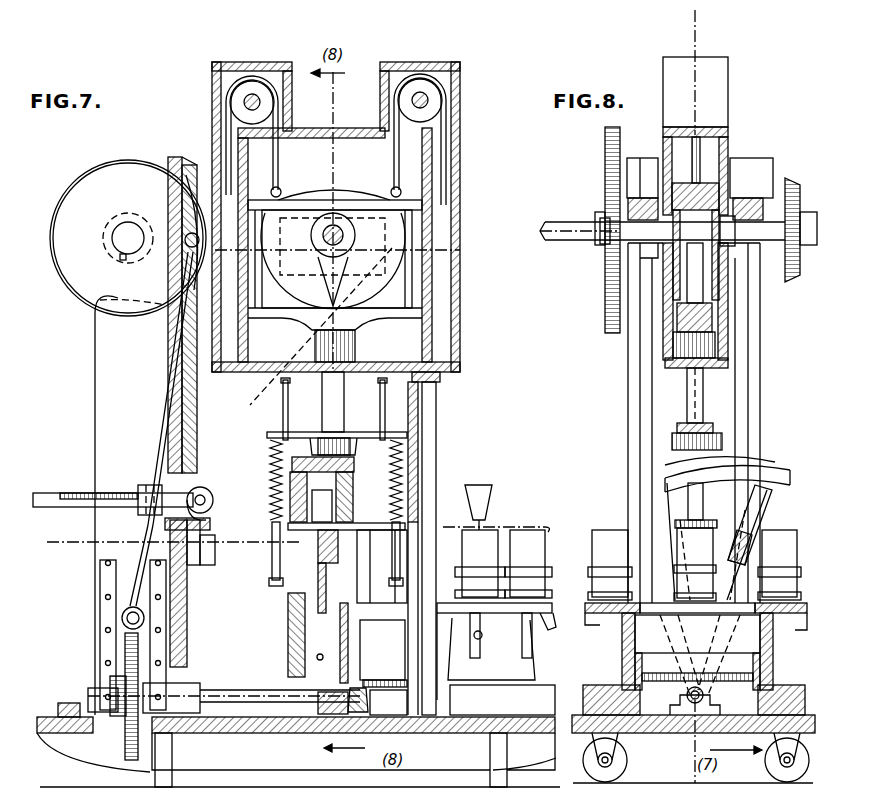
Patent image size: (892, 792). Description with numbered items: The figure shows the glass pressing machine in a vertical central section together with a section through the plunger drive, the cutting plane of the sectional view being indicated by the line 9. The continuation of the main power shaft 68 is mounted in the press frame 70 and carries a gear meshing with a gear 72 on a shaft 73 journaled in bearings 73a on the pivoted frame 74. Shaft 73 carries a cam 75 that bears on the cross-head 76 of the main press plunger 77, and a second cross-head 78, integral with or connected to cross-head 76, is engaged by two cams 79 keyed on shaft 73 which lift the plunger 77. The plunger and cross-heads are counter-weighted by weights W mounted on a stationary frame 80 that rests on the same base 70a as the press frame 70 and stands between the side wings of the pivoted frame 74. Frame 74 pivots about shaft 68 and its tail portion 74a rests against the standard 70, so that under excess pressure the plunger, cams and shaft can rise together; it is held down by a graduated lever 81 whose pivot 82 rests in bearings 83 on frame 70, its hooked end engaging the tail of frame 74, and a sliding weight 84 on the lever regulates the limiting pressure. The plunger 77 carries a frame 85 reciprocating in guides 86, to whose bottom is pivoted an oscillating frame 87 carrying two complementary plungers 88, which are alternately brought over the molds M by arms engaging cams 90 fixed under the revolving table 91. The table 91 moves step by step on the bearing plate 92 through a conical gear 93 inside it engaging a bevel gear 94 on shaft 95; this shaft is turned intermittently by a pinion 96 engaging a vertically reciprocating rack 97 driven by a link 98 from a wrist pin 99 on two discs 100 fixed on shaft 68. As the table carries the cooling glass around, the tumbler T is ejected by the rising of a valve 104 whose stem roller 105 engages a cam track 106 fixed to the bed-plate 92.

In FIG. 7, the shaft 68 is at (120, 228).
In FIG. 7, the discs 100 is at (128, 242).
In FIG. 7, the wrist pin 99 is at (210, 215).
In FIG. 7, the frame 80 is at (240, 163).
In FIG. 8, the frame 80 is at (728, 157).
In FIG. 7, the bearings 73a is at (339, 203).
In FIG. 8, the bearings 73a is at (642, 203).
In FIG. 7, the cross-head 78 is at (355, 191).
In FIG. 8, the cross-head 78 is at (707, 183).
In FIG. 7, the cams 79 is at (390, 227).
In FIG. 8, the cams 79 is at (715, 278).
In FIG. 7, the shaft 73 is at (585, 238).
In FIG. 8, the shaft 73 is at (746, 226).
In FIG. 7, the weights W is at (440, 281).
In FIG. 7, the cam 75 is at (690, 283).
In FIG. 8, the cam 75 is at (690, 303).
In FIG. 7, the cross-head 76 is at (680, 333).
In FIG. 8, the cross-head 76 is at (673, 340).
In FIG. 7, the press frame 70 is at (95, 370).
In FIG. 7, the link 98 is at (155, 443).
In FIG. 7, the pivoted frame 74 is at (173, 470).
In FIG. 8, the pivoted frame 74 is at (642, 372).
In FIG. 7, the tail portion 74a is at (197, 463).
In FIG. 8, the tail portion 74a is at (632, 450).
In FIG. 7, the lever 81 is at (74, 493).
In FIG. 7, the sliding weight 84 is at (145, 487).
In FIG. 7, the pivot 82 is at (213, 496).
In FIG. 7, the bearings 83 is at (207, 528).
In FIG. 7, the main press plunger 77 is at (688, 405).
In FIG. 8, the main press plunger 77 is at (695, 400).
In FIG. 8, the frame 85 is at (665, 470).
In FIG. 7, the tumbler T is at (481, 502).
In FIG. 7, the molds M is at (492, 540).
In FIG. 7, the section line 9 is at (501, 526).
In FIG. 7, the revolving table 91 is at (548, 603).
In FIG. 8, the revolving table 91 is at (782, 613).
In FIG. 7, the valve 104 is at (303, 590).
In FIG. 7, the roller 105 is at (300, 632).
In FIG. 7, the guides 86 is at (282, 636).
In FIG. 7, the complementary oscillating frame 87 is at (300, 658).
In FIG. 8, the complementary oscillating frame 87 is at (763, 483).
In FIG. 7, the rack 97 is at (128, 646).
In FIG. 7, the pinion 96 is at (122, 682).
In FIG. 7, the shaft 95 is at (223, 705).
In FIG. 7, the base 70a is at (273, 733).
In FIG. 7, the bevel gear 94 is at (368, 713).
In FIG. 7, the cams 90 is at (542, 624).
In FIG. 8, the cams 90 is at (807, 625).
In FIG. 7, the cam track 106 is at (458, 660).
In FIG. 7, the bearing plate 92 is at (496, 664).
In FIG. 8, the bearing plate 92 is at (562, 693).
In FIG. 8, the gear 72 is at (605, 142).
In FIG. 8, the complementary plungers 88 is at (748, 533).
In FIG. 8, the conical gear 93 is at (642, 675).